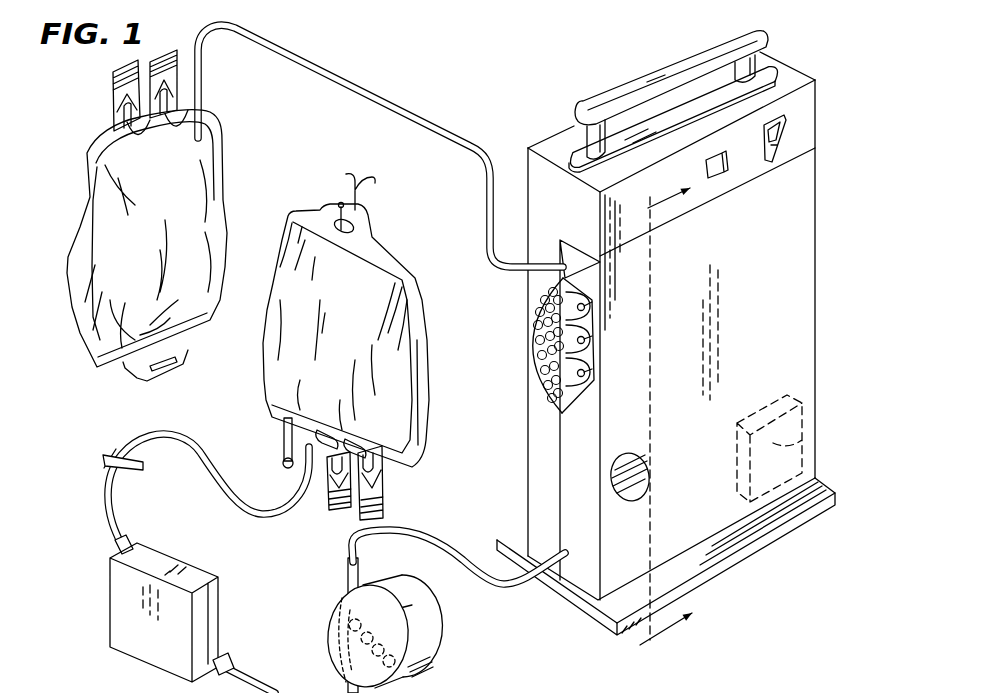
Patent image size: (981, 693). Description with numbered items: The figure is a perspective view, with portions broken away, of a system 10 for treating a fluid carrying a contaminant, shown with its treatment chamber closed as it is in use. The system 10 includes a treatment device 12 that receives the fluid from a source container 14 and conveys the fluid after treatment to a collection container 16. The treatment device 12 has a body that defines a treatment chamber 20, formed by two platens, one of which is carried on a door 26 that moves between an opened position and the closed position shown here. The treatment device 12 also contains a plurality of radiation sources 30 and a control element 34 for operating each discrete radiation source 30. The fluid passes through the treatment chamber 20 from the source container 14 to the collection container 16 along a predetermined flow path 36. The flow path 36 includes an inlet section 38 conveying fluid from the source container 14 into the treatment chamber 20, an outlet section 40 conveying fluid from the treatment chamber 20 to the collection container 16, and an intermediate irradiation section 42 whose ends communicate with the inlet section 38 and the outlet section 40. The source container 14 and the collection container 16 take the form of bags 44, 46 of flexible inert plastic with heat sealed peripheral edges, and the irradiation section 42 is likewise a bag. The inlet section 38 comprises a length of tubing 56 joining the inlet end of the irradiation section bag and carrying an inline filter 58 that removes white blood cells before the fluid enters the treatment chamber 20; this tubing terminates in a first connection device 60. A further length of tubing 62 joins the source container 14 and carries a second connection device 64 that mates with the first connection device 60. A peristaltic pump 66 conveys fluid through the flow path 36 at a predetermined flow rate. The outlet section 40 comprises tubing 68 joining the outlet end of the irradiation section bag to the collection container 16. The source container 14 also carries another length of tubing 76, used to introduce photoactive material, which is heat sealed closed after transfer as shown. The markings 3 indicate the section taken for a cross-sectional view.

The system 10 is at (443, 100).
The treatment device 12 is at (827, 122).
The source container 14 is at (350, 347).
The collection container 16 is at (169, 219).
The treatment chamber 20 is at (573, 345).
The door 26 is at (770, 350).
The radiation sources 30 is at (537, 358).
The control element 34 is at (812, 438).
The flow path 36 is at (453, 522).
The inlet section 38 is at (519, 588).
The outlet section 40 is at (461, 120).
The irradiation section 42 is at (597, 333).
The bag 44 is at (300, 348).
The bag 46 is at (84, 347).
The tubing 56 is at (266, 692).
The inline filter 58 is at (160, 640).
The first connection device 60 is at (110, 467).
The tubing 62 is at (200, 442).
The second connection device 64 is at (108, 450).
The peristaltic pump 66 is at (428, 620).
The tubing 68 is at (364, 84).
The tubing 76 is at (285, 450).
The section line 3- 3 is at (666, 408).